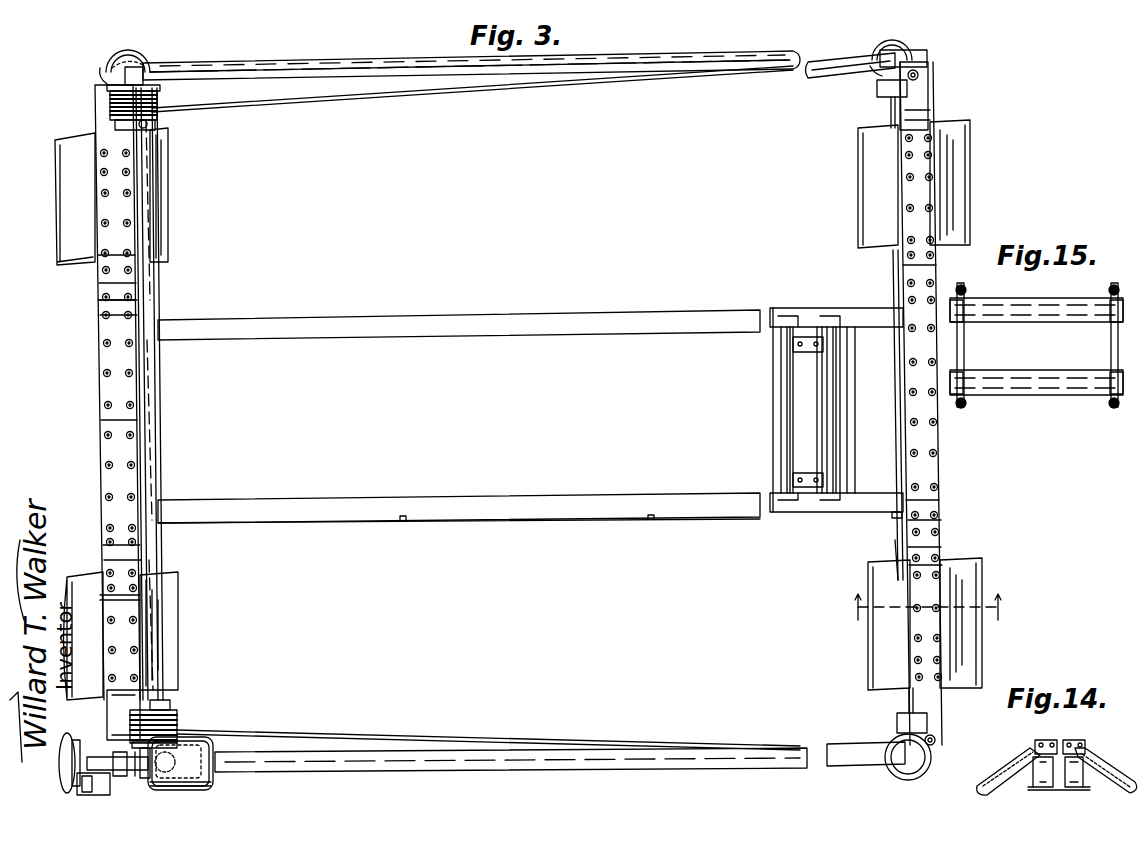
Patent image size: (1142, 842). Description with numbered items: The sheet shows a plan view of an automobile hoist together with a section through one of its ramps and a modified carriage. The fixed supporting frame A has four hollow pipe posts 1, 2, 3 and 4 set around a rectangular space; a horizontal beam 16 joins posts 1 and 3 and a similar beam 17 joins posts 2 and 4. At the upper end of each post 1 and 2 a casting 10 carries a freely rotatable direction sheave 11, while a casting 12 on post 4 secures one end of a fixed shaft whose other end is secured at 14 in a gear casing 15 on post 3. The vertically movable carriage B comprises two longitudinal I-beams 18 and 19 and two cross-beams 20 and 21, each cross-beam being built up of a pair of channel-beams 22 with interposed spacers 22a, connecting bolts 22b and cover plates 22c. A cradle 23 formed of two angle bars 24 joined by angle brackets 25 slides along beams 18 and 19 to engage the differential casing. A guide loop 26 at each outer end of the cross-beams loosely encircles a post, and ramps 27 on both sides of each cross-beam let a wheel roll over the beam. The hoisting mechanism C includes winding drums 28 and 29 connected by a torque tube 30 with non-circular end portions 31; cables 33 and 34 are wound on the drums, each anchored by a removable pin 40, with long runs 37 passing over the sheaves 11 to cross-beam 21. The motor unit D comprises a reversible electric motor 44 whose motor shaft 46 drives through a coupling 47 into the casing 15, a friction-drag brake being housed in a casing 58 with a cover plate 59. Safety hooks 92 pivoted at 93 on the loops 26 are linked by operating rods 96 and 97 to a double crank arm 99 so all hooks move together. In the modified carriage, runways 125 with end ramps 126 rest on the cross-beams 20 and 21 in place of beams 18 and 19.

In FIG. 3, the upright post 1 is at (920, 768).
In FIG. 15, the upright post 1 is at (1110, 408).
In FIG. 3, the upright post 2 is at (903, 46).
In FIG. 15, the upright post 2 is at (1112, 286).
In FIG. 3, the upright post 3 is at (178, 761).
In FIG. 15, the upright post 3 is at (965, 408).
In FIG. 3, the upright post 4 is at (130, 50).
In FIG. 15, the upright post 4 is at (967, 287).
In FIG. 3, the casting 10 is at (890, 56).
In FIG. 3, the direction sheave 11 is at (922, 58).
In FIG. 3, the casting 12 is at (150, 72).
In FIG. 3, the shaft securing point 14 is at (926, 607).
In FIG. 3, the gear casing 15 is at (157, 783).
In FIG. 3, the horizontal beam 16 is at (495, 763).
In FIG. 3, the horizontal beam 17 is at (376, 63).
In FIG. 3, the longitudinal I-beam 18 is at (553, 515).
In FIG. 3, the longitudinal I-beam 19 is at (397, 318).
In FIG. 3, the cross-beam 20 is at (98, 372).
In FIG. 15, the cross-beam 20 is at (964, 352).
In FIG. 3, the cross-beam 21 is at (956, 470).
In FIG. 15, the cross-beam 21 is at (1112, 348).
In FIG. 3, the channel-beam 22 is at (930, 116).
In FIG. 14, the channel-beam 22 is at (1040, 790).
In FIG. 14, the spacer 22a is at (1062, 756).
In FIG. 14, the connecting bolt 22b is at (1030, 786).
In FIG. 3, the cover plate 22c is at (102, 302).
In FIG. 14, the cover plate 22c is at (1035, 748).
In FIG. 3, the cradle 23 is at (774, 386).
In FIG. 3, the angle bar 24 is at (830, 415).
In FIG. 3, the angle bracket 25 is at (790, 346).
In FIG. 3, the guide loop 26 is at (136, 54).
In FIG. 3, the ramp 27 is at (62, 204).
In FIG. 14, the ramp 27 is at (1003, 771).
In FIG. 3, the winding drum 28 is at (175, 716).
In FIG. 3, the winding drum 29 is at (160, 118).
In FIG. 3, the torque tube 30 is at (160, 596).
In FIG. 3, the non-circular end portion 31 is at (155, 130).
In FIG. 3, the cable 33 is at (180, 722).
In FIG. 3, the cable 34 is at (160, 105).
In FIG. 3, the long cable run 37 is at (292, 102).
In FIG. 3, the removable pin 40 is at (172, 702).
In FIG. 3, the electric motor 44 is at (215, 784).
In FIG. 3, the motor shaft 46 is at (152, 766).
In FIG. 3, the coupling 47 is at (119, 785).
In FIG. 3, the brake casing 58 is at (84, 794).
In FIG. 3, the cover plate 59 is at (62, 788).
In FIG. 3, the safety hook 92 is at (892, 98).
In FIG. 3, the hook pivot axis 93 is at (878, 92).
In FIG. 3, the operating rod 96 is at (893, 268).
In FIG. 3, the operating rod 97 is at (896, 546).
In FIG. 3, the double crank arm 99 is at (895, 519).
In FIG. 15, the runway 125 is at (1036, 356).
In FIG. 15, the ramp 126 is at (962, 318).
In FIG. 3, the supporting frame A is at (282, 62).
In FIG. 3, the carriage B is at (467, 279).
In FIG. 3, the cable hoisting mechanism C is at (156, 496).
In FIG. 3, the motor unit D is at (183, 794).